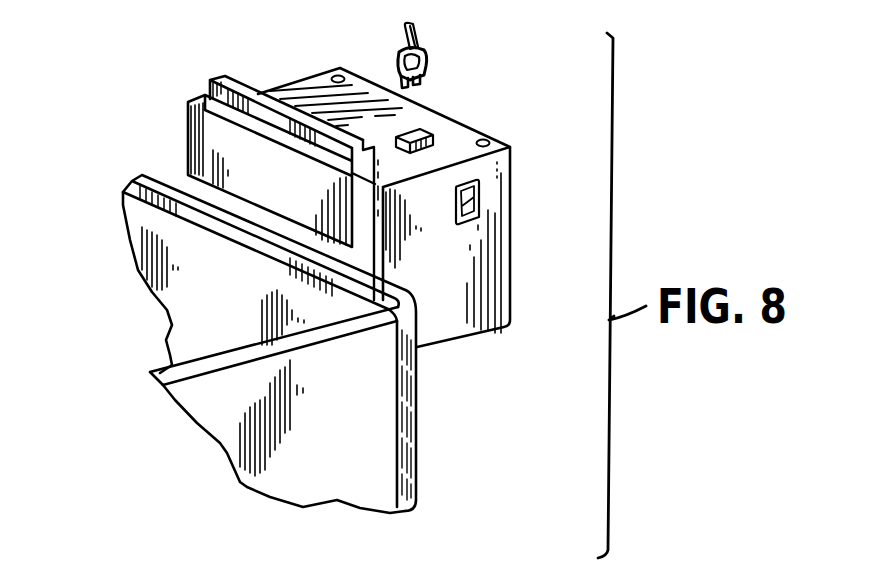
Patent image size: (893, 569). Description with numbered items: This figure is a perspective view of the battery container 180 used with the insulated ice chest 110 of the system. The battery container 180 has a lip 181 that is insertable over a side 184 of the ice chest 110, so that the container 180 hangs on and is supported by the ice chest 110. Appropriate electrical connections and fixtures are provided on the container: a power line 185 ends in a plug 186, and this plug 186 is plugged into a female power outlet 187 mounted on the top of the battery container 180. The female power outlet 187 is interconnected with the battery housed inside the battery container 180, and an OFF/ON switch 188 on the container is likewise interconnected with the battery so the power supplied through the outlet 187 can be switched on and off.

The insulated ice chest 110 is at (370, 443).
The battery container 180 is at (505, 293).
The lip 181 is at (187, 143).
The side of the ice chest 184 is at (152, 270).
The power line 185 is at (419, 42).
The plug 186 is at (427, 70).
The female power outlet 187 is at (433, 133).
The OFF/ON switch 188 is at (479, 201).